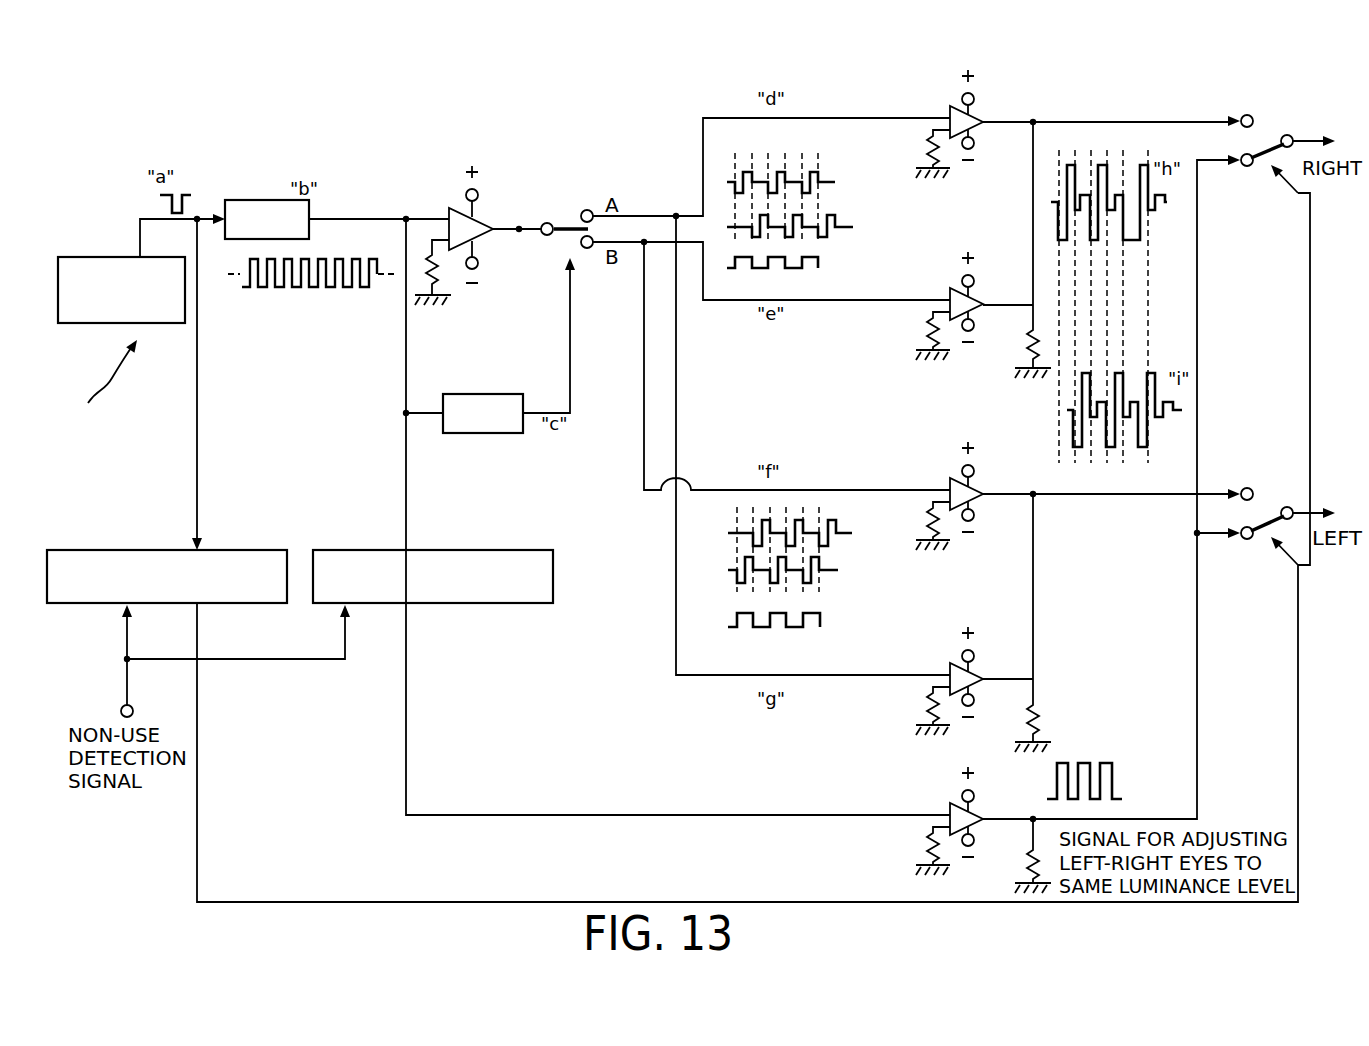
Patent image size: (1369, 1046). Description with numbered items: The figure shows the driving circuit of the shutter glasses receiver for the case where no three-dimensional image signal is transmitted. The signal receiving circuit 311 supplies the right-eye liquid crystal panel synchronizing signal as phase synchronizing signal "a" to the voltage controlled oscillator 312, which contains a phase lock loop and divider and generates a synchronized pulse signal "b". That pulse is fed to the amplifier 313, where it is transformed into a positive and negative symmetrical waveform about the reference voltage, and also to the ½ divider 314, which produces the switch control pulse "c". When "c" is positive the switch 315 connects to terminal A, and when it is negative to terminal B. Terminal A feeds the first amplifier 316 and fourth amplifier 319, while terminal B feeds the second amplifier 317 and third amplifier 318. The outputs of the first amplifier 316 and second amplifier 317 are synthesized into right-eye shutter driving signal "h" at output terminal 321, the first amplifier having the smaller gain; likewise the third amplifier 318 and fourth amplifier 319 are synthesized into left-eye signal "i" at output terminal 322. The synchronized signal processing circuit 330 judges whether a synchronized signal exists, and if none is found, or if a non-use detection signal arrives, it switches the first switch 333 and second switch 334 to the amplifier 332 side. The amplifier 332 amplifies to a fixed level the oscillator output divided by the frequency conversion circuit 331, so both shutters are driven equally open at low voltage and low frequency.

The signal receiving circuit 311 is at (163, 323).
The voltage controlled oscillator 312 is at (258, 199).
The amplifier 313 is at (455, 205).
The ½ divider 314 is at (491, 393).
The switch 315 is at (568, 218).
The first amplifier 316 is at (953, 100).
The second amplifier 317 is at (953, 283).
The third amplifier 318 is at (953, 475).
The fourth amplifier 319 is at (953, 660).
The output terminal 321 is at (1130, 109).
The output terminal 322 is at (1130, 512).
The synchronized signal processing circuit 330 is at (148, 548).
The frequency conversion circuit 331 is at (350, 548).
The amplifier 332 is at (960, 802).
The first switch 333 is at (1282, 117).
The second switch 334 is at (1282, 492).